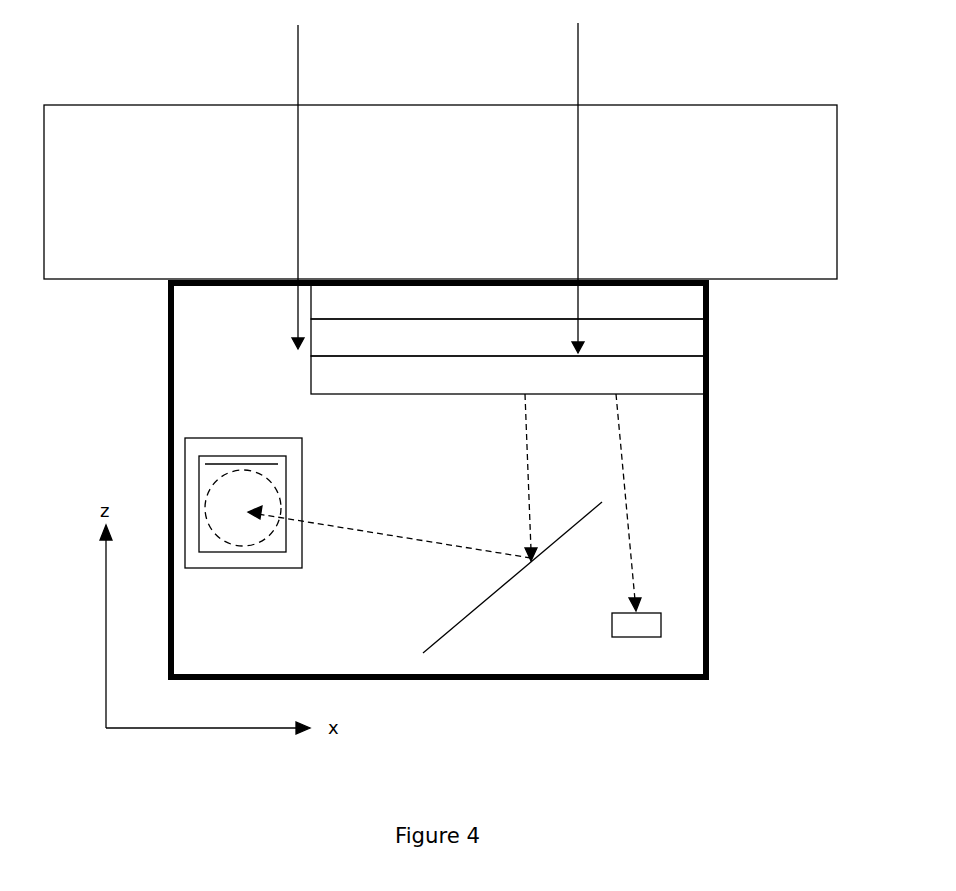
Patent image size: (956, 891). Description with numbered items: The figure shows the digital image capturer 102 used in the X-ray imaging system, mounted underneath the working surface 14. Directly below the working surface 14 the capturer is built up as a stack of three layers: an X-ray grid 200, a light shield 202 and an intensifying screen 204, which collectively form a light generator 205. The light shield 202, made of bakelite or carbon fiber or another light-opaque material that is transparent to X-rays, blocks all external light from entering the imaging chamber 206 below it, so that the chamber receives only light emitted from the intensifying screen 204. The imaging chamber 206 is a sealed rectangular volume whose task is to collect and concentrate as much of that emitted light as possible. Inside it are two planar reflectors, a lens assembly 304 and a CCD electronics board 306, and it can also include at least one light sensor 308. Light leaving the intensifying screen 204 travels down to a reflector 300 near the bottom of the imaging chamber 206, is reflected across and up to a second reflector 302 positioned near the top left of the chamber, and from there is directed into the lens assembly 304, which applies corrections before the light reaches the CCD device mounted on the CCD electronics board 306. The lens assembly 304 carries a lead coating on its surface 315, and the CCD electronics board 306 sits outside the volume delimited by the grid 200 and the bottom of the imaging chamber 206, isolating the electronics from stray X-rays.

The working surface 14 is at (158, 103).
The digital image capturer 102 is at (140, 399).
The X-ray grid 200 is at (693, 302).
The light shield 202 is at (693, 340).
The intensifying screen 204 is at (693, 377).
The light generator 205 is at (592, 338).
The imaging chamber 206 is at (690, 481).
The reflector 300 is at (512, 578).
The second reflector 302 is at (302, 485).
The lens assembly 304 is at (232, 547).
The CCD electronics board 306 is at (283, 553).
The light sensor 308 is at (612, 628).
The surface 315 is at (278, 464).